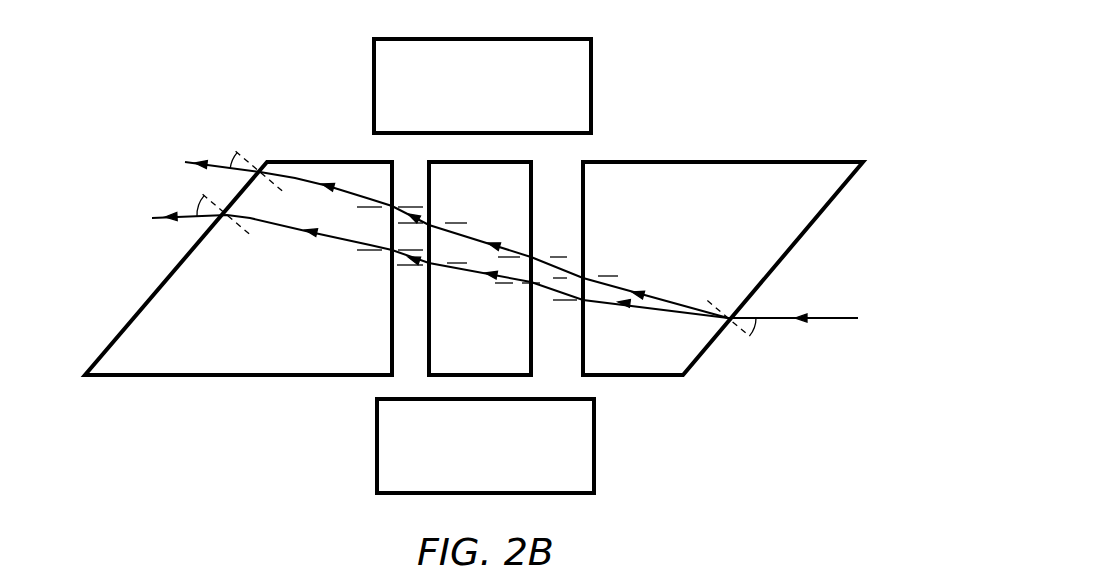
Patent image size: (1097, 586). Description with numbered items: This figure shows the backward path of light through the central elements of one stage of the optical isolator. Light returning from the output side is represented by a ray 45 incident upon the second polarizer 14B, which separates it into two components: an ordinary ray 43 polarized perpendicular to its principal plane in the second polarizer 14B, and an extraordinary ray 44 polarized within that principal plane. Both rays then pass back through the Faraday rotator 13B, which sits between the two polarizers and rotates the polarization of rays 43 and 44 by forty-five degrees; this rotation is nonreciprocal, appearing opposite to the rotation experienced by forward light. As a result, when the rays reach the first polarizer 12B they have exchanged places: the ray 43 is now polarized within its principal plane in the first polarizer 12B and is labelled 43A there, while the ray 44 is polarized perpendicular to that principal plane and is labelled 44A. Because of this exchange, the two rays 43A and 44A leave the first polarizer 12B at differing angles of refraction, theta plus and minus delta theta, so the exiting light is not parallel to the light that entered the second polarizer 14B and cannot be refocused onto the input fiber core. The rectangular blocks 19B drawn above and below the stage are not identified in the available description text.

The first polarizer 12B is at (238, 298).
The Faraday rotator 13B is at (550, 287).
The second polarizer 14B is at (723, 242).
The magnet 19B is at (529, 266).
The ordinary ray 43 is at (629, 282).
The extraordinary ray 44 is at (625, 320).
The ray 43 in the first polarizer 43A is at (352, 182).
The ray 44 in the first polarizer 44A is at (329, 242).
The incident light ray 45 is at (801, 335).